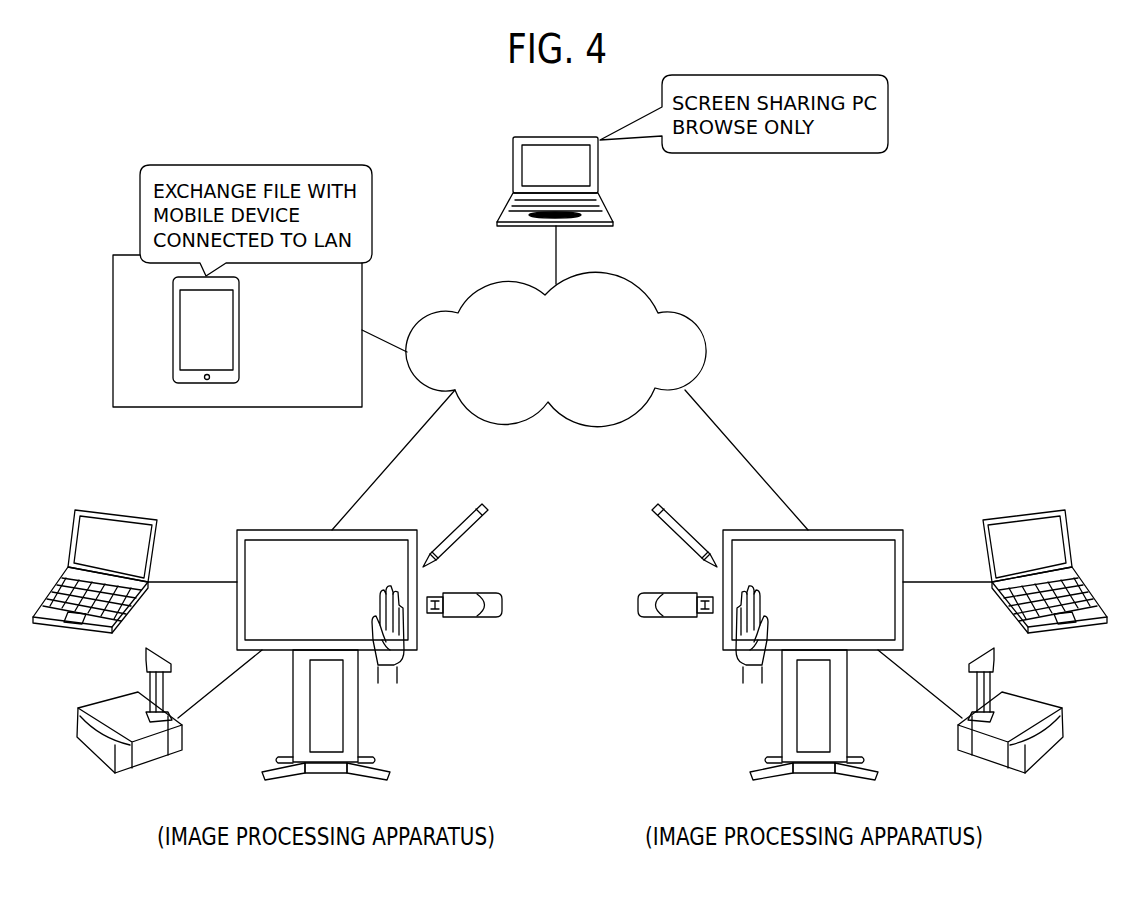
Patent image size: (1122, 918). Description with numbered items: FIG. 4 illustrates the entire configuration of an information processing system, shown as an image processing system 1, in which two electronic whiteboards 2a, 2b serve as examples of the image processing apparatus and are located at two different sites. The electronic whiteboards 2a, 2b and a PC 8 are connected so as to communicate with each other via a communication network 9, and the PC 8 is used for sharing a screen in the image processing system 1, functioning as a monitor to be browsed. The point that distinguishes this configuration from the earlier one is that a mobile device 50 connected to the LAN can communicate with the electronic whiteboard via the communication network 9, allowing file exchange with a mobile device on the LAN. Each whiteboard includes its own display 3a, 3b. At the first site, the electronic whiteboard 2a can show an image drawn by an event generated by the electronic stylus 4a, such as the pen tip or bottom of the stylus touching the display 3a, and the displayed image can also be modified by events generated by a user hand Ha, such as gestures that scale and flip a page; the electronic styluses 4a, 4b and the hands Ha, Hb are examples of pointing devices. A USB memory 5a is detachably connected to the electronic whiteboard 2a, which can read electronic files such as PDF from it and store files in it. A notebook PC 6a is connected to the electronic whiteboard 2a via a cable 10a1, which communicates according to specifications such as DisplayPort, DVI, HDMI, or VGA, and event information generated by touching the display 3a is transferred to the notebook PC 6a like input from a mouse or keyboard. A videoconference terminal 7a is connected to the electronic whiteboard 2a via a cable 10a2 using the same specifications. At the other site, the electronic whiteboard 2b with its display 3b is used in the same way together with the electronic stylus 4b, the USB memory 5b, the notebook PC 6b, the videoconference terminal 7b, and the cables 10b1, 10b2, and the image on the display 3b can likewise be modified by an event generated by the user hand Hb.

The image processing system 1 is at (938, 98).
The PC 8 is at (579, 137).
The communication network 9 is at (627, 279).
The mobile device 50 is at (240, 322).
The electronic whiteboard 2a is at (813, 651).
The electronic whiteboard 2b is at (329, 651).
The display 3a is at (873, 527).
The display 3b is at (390, 527).
The electronic stylus 4a is at (655, 505).
The electronic stylus 4b is at (485, 506).
The USB memory 5a is at (660, 617).
The USB memory 5b is at (477, 617).
The notebook PC 6a is at (1012, 513).
The notebook PC 6b is at (127, 513).
The videoconference terminal 7a is at (1012, 772).
The videoconference terminal 7b is at (130, 773).
The user hand Ha is at (738, 660).
The user hand Hb is at (402, 660).
The cable 10a1 is at (962, 578).
The cable 10a2 is at (915, 690).
The cable 10b1 is at (190, 565).
The cable 10b2 is at (222, 690).